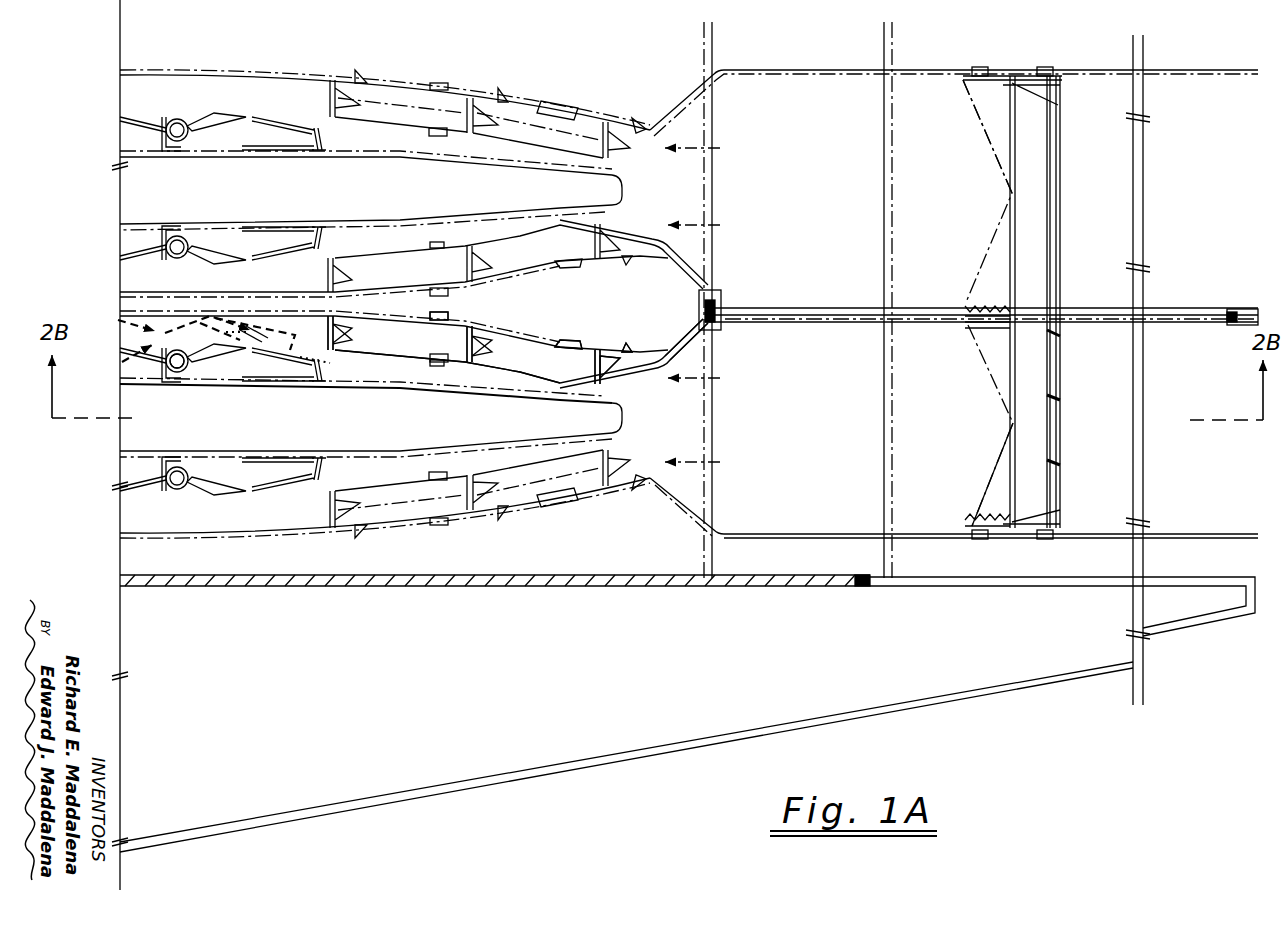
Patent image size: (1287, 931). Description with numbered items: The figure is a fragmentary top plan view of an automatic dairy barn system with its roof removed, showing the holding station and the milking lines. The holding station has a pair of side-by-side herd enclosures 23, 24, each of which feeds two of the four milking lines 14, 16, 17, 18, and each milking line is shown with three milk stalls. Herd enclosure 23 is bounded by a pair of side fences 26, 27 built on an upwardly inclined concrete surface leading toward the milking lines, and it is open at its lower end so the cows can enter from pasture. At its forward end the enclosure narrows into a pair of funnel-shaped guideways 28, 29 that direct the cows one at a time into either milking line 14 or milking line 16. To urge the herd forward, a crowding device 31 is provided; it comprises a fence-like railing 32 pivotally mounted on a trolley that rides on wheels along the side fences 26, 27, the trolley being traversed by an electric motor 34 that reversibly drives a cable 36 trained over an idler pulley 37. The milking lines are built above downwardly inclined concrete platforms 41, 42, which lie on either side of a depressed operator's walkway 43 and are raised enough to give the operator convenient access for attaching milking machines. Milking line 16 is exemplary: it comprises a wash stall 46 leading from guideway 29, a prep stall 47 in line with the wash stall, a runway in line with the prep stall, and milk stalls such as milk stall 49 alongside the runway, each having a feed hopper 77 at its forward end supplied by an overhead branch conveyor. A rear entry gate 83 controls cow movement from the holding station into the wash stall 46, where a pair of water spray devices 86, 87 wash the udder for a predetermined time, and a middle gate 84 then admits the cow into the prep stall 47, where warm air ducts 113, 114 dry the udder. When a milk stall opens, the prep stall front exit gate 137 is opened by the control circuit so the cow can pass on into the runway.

The milking line 14 is at (720, 462).
The milking line 16 is at (720, 378).
The milking line 17 is at (720, 225).
The milking line 18 is at (720, 148).
The herd enclosure 23 is at (947, 440).
The herd enclosure 24 is at (952, 197).
The side fence 26 is at (832, 72).
The side fence 27 is at (828, 308).
The funnel-shaped guideway 28 is at (672, 494).
The funnel-shaped guideway 29 is at (683, 343).
The crowding device 31 is at (1077, 357).
The fence-like railing 32 is at (1062, 438).
The electric motor 34 is at (713, 298).
The cable 36 is at (852, 324).
The idler pulley 37 is at (1228, 318).
The concrete platform 41 is at (383, 470).
The concrete platform 42 is at (370, 373).
The operator's walkway 43 is at (371, 421).
The wash stall 46 is at (596, 352).
The prep stall 47 is at (404, 320).
The milk stall 49 is at (250, 340).
The feed hopper 77 is at (175, 372).
The rear entry gate 83 is at (622, 353).
The middle gate 84 is at (480, 330).
The water spray device 86 is at (523, 378).
The water spray device 87 is at (569, 338).
The warm air duct 113 is at (432, 362).
The warm air duct 114 is at (438, 312).
The prep stall front exit gate 137 is at (288, 350).